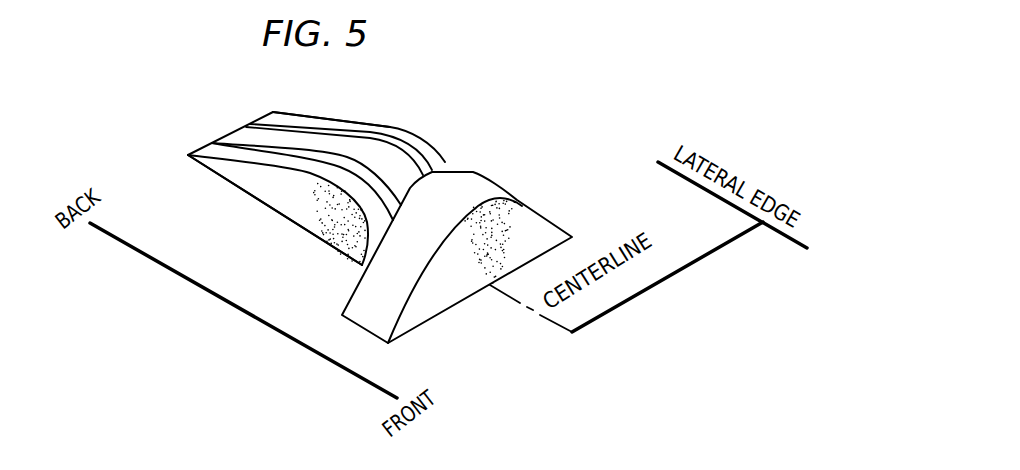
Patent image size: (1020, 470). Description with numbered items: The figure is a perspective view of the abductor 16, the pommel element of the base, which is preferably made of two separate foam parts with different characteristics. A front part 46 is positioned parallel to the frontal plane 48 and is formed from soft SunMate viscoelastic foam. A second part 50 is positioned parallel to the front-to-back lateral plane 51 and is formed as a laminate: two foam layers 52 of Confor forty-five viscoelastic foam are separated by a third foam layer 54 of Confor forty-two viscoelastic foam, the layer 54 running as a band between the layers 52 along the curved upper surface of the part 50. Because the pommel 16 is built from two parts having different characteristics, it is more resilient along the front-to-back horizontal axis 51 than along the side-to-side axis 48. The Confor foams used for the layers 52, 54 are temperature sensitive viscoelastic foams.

The abductor 16 is at (483, 128).
The front part 46 is at (445, 300).
The frontal plane 48 is at (710, 250).
The second part 50 is at (240, 129).
The lateral plane 51 is at (128, 243).
The foam layers 52 is at (395, 135).
The third foam layer 54 is at (328, 133).